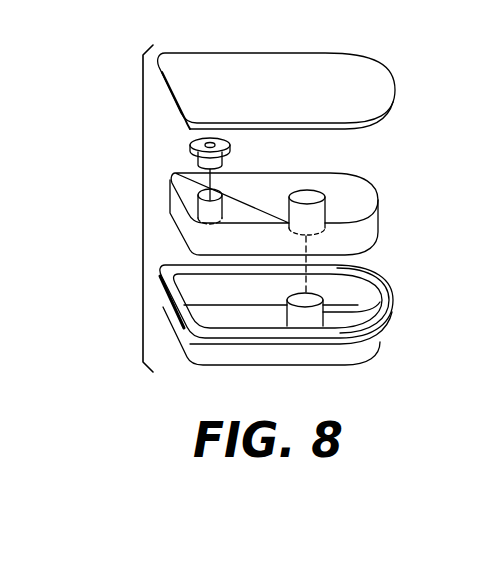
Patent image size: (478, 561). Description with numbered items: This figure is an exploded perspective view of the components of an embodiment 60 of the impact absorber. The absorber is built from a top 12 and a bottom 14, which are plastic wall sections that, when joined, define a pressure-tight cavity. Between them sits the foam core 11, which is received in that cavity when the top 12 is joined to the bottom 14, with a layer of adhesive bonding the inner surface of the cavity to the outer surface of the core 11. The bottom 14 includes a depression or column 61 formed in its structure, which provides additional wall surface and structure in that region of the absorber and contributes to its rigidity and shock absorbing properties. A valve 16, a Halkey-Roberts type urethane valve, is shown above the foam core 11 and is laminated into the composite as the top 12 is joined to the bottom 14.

The embodiment of the impact absorber 60 is at (143, 208).
The top wall section 12 is at (383, 106).
The valve 16 is at (232, 156).
The foam core 11 is at (348, 182).
The bottom wall section 14 is at (382, 340).
The column 61 is at (312, 318).